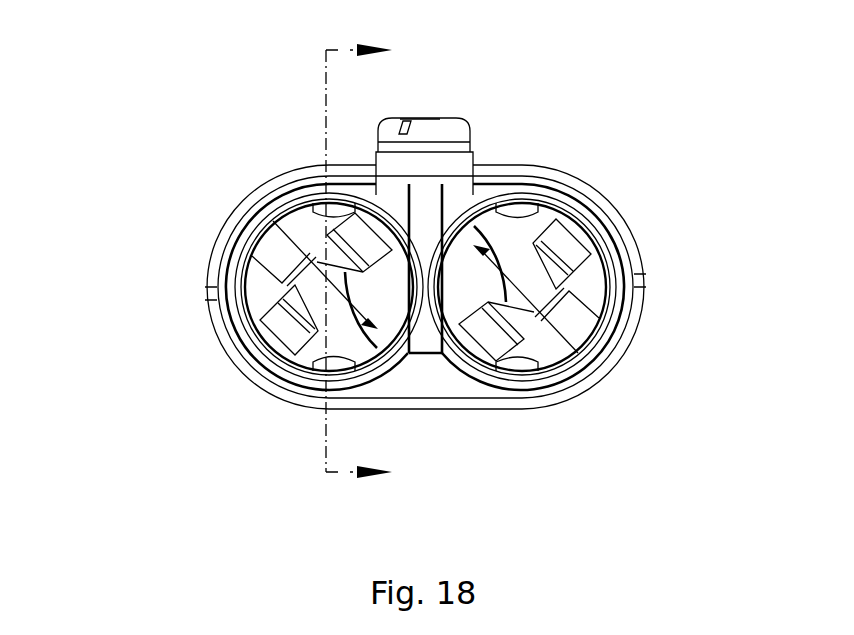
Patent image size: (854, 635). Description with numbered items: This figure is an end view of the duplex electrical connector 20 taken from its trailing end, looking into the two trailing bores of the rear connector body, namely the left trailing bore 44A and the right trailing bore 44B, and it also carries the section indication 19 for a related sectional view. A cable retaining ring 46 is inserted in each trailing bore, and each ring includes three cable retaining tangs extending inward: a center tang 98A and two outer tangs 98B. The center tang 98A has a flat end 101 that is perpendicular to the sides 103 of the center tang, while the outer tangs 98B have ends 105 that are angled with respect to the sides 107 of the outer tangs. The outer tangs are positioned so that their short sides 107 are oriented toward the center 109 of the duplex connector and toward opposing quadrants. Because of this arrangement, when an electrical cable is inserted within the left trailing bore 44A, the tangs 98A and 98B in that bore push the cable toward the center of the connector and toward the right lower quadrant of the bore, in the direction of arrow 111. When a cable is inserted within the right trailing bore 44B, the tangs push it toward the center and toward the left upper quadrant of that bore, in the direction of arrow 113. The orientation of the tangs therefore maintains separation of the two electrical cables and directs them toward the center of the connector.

The section line 19- 19 is at (359, 263).
The duplex electrical connector 20 is at (157, 110).
The left trailing bore 44A is at (278, 197).
The right trailing bore 44B is at (578, 224).
The cable retaining ring 46 is at (245, 237).
The center tang 98A is at (582, 330).
The outer tangs 98B is at (568, 232).
The flat end 101 is at (577, 330).
The sides of the center tang 103 is at (590, 310).
The ends of the outer tangs 105 is at (300, 296).
The sides of the outer tangs 107 is at (282, 318).
The center of the duplex connector 109 is at (443, 280).
The arrow 111 is at (358, 302).
The arrow 113 is at (543, 210).